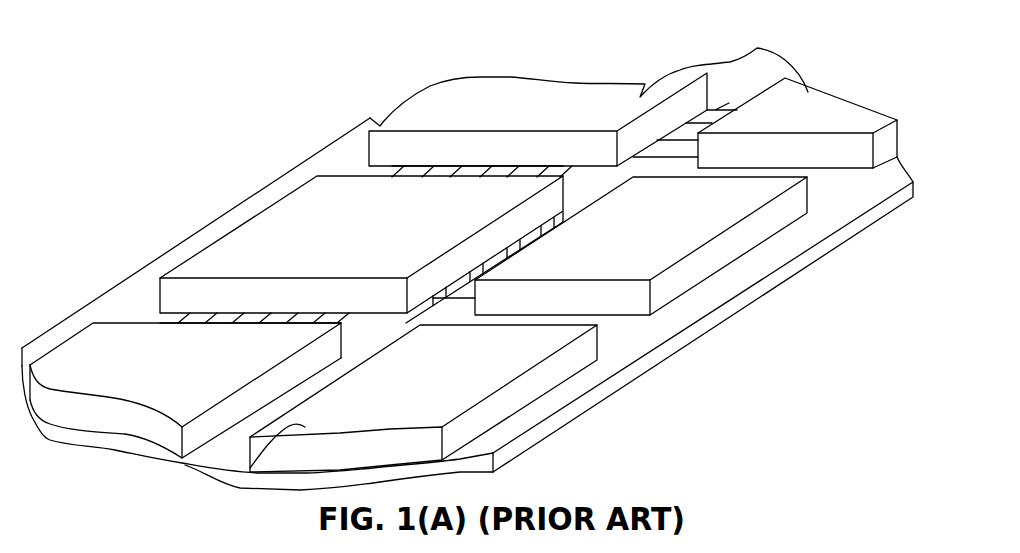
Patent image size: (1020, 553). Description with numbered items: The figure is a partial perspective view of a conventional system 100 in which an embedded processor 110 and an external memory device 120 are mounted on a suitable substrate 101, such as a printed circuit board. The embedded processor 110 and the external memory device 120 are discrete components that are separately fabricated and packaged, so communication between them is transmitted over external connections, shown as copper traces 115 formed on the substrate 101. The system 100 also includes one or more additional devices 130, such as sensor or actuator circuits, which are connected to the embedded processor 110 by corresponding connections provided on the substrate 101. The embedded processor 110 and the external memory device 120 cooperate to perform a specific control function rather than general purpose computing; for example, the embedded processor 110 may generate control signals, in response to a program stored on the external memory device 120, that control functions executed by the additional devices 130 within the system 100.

The system 100 is at (232, 78).
The substrate 101 is at (597, 392).
The embedded processor 110 is at (336, 210).
The copper traces 115 is at (520, 247).
The external memory device 120 is at (680, 220).
The additional devices 130 is at (196, 388).